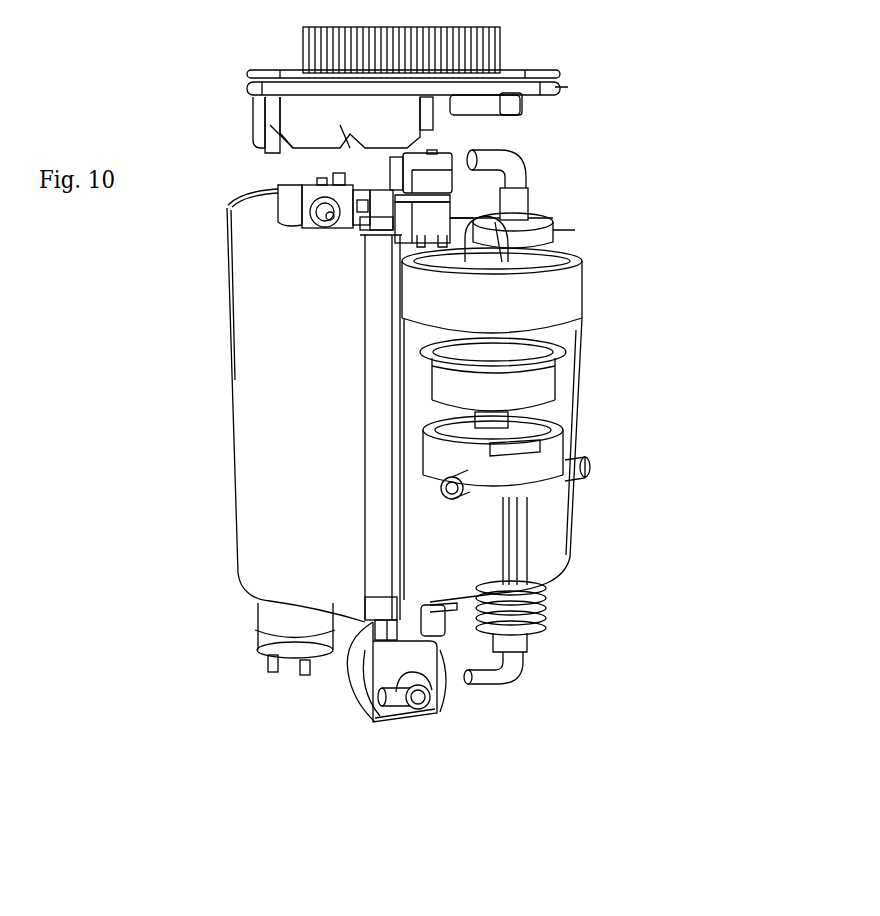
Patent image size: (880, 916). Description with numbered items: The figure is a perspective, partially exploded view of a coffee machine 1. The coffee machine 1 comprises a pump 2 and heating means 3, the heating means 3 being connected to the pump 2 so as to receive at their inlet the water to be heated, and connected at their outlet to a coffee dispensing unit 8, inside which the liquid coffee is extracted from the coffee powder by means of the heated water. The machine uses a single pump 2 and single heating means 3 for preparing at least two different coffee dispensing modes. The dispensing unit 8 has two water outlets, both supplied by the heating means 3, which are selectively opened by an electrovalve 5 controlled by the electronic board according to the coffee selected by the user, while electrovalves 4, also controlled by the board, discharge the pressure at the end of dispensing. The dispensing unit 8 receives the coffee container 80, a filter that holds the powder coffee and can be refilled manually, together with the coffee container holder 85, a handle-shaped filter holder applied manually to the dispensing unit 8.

The coffee machine 1 is at (655, 170).
The pump 2 is at (437, 718).
The heating means 3 is at (548, 616).
The electrovalves 4 is at (402, 213).
The electrovalve 5 is at (297, 206).
The coffee dispensing unit 8 is at (594, 288).
The coffee container 80 is at (562, 383).
The coffee container holder 85 is at (560, 447).